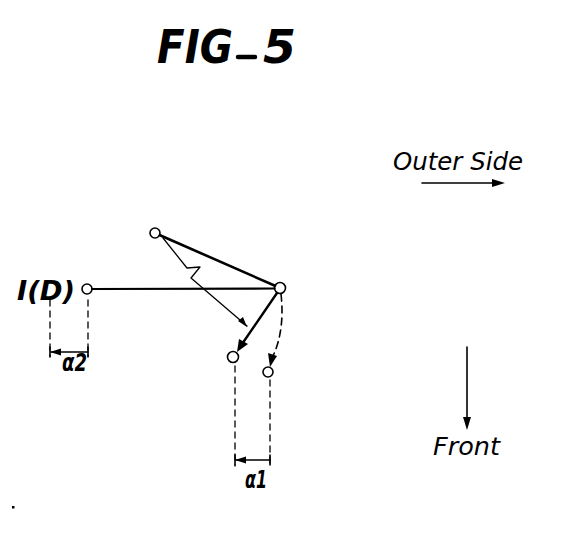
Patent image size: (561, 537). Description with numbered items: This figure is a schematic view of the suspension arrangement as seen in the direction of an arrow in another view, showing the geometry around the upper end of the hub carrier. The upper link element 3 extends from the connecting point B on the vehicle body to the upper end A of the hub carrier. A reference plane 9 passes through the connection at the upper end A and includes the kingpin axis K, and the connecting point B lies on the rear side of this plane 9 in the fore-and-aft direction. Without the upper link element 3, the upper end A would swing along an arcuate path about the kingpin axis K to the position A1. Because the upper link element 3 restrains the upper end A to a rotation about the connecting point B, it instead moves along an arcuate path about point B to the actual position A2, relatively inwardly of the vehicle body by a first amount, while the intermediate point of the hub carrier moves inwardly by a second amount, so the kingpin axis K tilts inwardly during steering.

The upper link element 3 is at (232, 262).
The reference plane 9 is at (147, 291).
The upper end of the hub carrier A is at (287, 287).
The position A1 is at (274, 374).
The actual position A2 is at (228, 355).
The connecting point B is at (154, 227).
The kingpin axis K is at (89, 283).